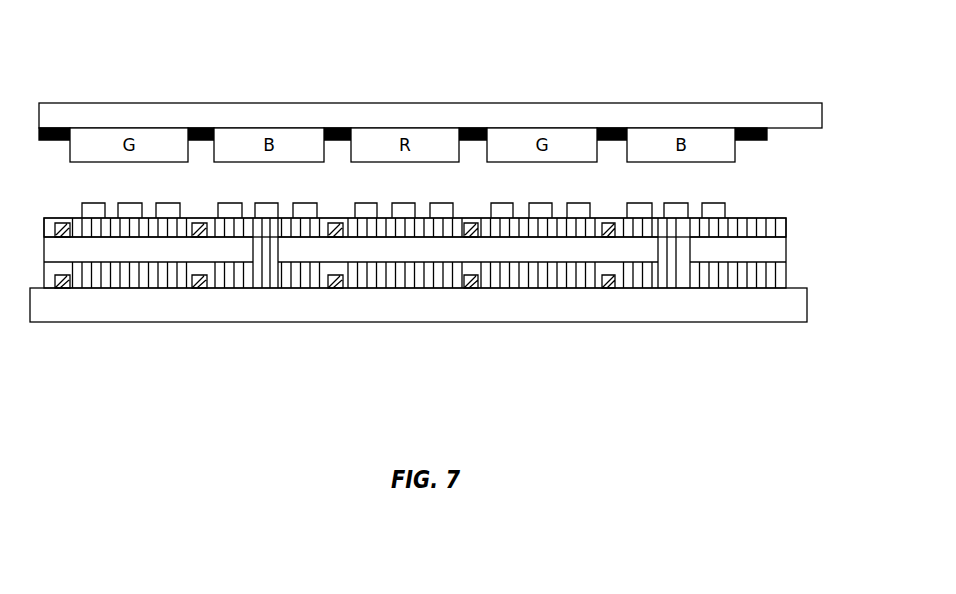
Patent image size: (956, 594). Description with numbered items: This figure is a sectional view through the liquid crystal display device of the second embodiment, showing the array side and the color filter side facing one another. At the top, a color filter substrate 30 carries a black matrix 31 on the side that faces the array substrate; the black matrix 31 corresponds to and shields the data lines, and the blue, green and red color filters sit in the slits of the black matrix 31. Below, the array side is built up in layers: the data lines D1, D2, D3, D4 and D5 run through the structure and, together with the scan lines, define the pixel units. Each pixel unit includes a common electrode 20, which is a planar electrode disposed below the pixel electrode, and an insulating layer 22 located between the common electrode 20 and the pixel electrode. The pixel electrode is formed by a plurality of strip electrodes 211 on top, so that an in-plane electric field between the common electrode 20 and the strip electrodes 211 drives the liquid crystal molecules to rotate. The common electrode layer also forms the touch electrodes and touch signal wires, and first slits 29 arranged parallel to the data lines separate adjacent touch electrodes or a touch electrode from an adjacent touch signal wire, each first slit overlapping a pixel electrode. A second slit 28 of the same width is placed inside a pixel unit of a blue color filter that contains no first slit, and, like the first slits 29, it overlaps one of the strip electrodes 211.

The color filter substrate 30 is at (685, 103).
The black matrix 31 is at (767, 140).
The strip electrodes 211 is at (677, 203).
The insulating layer 22 is at (775, 230).
The common electrode 20 is at (786, 248).
The second slit 28 is at (266, 245).
The first slits 29 is at (676, 257).
The data line D1 is at (65, 288).
The data line D2 is at (197, 288).
The data line D3 is at (335, 288).
The data line D4 is at (470, 288).
The data line D5 is at (607, 288).